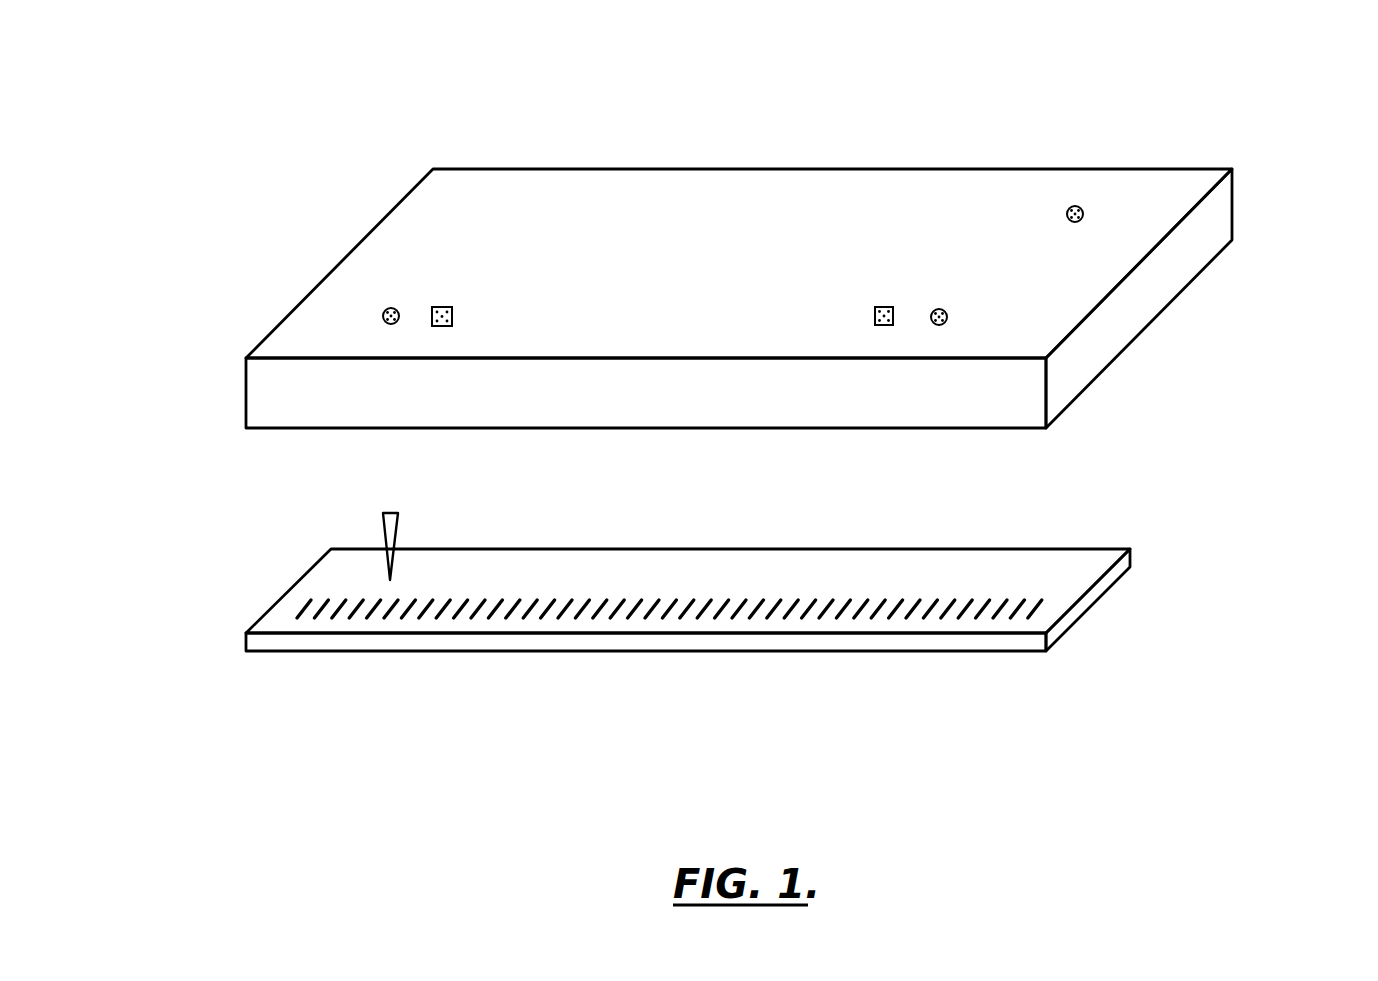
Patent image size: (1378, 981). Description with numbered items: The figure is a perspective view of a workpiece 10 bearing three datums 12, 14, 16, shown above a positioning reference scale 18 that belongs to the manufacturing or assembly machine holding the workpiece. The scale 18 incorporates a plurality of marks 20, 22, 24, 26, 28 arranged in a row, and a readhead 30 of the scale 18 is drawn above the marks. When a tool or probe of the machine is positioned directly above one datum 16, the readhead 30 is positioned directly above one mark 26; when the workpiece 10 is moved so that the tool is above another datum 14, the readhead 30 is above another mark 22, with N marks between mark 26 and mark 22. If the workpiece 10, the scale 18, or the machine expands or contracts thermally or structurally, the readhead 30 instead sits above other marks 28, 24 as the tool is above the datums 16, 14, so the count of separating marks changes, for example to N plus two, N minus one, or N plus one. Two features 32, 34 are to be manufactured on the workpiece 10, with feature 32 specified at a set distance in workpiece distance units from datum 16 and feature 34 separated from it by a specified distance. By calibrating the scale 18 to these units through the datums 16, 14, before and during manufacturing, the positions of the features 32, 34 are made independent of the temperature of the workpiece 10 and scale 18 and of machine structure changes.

The workpiece 10 is at (458, 167).
The datum 12 is at (1120, 214).
The datum 14 is at (985, 317).
The datum 16 is at (347, 316).
The positioning reference scale 18 is at (688, 549).
The mark 20 is at (993, 621).
The mark 22 is at (927, 617).
The mark 24 is at (943, 619).
The mark 26 is at (385, 618).
The mark 28 is at (375, 607).
The readhead 30 is at (384, 524).
The feature 32 is at (443, 275).
The feature 34 is at (884, 275).